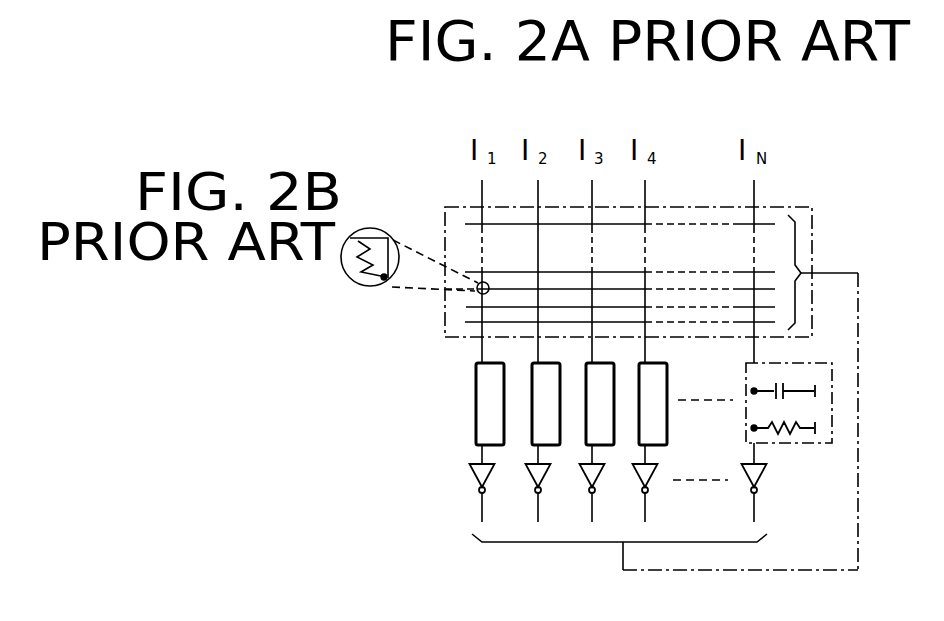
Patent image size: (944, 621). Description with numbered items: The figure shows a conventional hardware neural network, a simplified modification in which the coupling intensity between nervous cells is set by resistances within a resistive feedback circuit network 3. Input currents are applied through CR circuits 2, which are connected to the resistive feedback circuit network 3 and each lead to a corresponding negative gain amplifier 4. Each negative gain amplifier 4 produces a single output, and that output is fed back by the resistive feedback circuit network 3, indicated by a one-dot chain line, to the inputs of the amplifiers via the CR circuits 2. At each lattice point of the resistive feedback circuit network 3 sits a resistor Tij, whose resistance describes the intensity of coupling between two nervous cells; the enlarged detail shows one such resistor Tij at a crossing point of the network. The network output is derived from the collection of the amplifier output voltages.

In FIG. 2A, the resistive feedback circuit network 3 is at (447, 207).
In FIG. 2A, the CR circuit 2 is at (532, 405).
In FIG. 2A, the negative gain amplifier 4 is at (472, 476).
In FIG. 2B, the resistor Tij is at (366, 287).